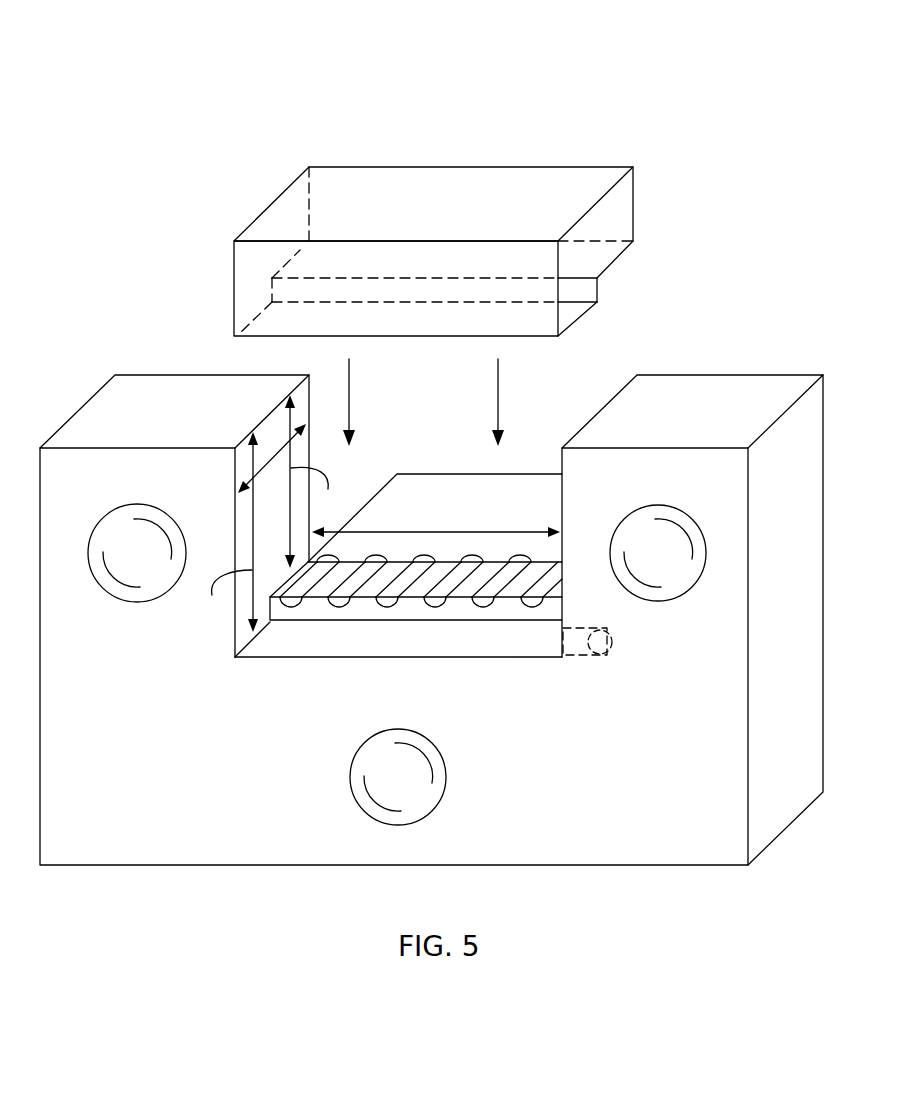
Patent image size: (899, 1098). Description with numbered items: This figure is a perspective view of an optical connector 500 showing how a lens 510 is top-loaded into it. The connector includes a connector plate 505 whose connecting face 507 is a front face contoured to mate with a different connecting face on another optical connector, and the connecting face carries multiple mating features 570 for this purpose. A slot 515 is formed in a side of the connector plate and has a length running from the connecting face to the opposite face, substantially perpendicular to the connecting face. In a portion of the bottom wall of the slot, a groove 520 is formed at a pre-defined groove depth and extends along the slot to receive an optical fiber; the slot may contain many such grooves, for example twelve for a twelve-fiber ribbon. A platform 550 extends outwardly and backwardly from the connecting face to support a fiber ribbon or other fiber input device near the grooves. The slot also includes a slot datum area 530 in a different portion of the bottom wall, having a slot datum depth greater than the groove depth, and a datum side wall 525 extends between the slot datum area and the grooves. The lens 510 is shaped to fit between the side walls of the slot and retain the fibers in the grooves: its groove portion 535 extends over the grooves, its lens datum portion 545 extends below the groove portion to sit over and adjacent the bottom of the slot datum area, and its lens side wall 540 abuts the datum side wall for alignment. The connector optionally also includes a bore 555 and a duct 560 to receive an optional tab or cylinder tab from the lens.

The optical connector 500 is at (172, 61).
The connector plate 505 is at (138, 385).
The connecting face 507 is at (167, 838).
The lens 510 is at (455, 170).
The slot 515 is at (448, 530).
The groove 520 is at (345, 600).
The datum side wall 525 is at (409, 612).
The slot datum area 530 is at (515, 645).
The groove portion 535 is at (600, 257).
The lens side wall 540 is at (590, 293).
The lens datum portion 545 is at (568, 318).
The platform 550 is at (540, 477).
The bore 555 is at (615, 641).
The duct 560 is at (583, 653).
The mating features 570 is at (132, 603).